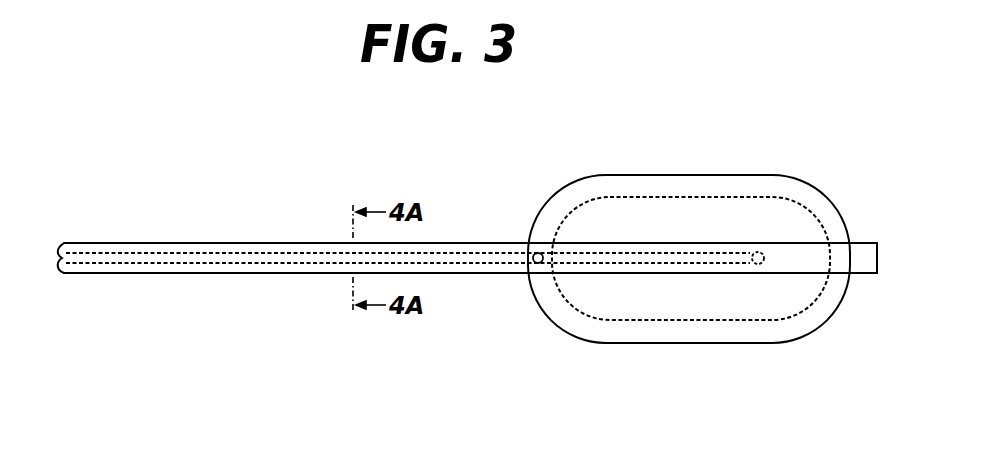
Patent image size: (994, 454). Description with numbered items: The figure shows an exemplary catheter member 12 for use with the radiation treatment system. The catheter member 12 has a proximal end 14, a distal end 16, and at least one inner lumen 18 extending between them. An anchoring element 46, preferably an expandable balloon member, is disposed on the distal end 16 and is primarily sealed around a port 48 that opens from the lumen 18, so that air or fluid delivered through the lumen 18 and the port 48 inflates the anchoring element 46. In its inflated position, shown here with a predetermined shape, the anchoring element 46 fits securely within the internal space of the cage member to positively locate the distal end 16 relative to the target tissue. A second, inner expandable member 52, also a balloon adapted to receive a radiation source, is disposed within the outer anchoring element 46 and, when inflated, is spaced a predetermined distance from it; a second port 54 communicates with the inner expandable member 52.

The catheter member 12 is at (261, 147).
The proximal end 14 is at (102, 203).
The distal end 16 is at (838, 154).
The inner lumen 18 is at (212, 256).
The anchoring element 46 is at (600, 175).
The port 48 is at (538, 263).
The inner expandable member 52 is at (688, 194).
The second port 54 is at (758, 268).